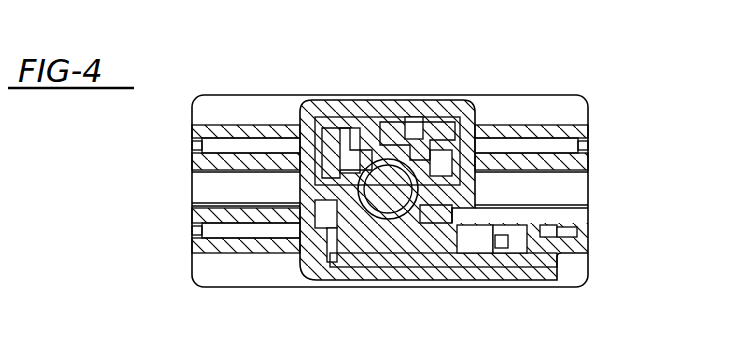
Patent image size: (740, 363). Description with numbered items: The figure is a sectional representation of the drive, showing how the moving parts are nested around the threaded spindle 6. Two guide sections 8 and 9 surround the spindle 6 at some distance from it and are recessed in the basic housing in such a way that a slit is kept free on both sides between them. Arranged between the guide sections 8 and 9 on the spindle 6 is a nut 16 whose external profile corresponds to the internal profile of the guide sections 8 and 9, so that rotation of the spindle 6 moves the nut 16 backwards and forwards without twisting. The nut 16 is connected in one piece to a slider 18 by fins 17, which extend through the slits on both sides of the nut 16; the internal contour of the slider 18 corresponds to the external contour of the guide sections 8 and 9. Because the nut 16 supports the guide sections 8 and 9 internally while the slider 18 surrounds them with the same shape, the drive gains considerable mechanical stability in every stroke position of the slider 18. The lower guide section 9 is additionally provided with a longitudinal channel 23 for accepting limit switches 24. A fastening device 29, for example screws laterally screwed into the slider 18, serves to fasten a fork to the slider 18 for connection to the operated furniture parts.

The slider 18 is at (260, 110).
The guide section 8 is at (374, 125).
The fins 17 is at (462, 190).
The fastening device 29 is at (562, 197).
The spindle 6 is at (392, 196).
The guide section 9 is at (395, 282).
The nut 16 is at (440, 205).
The limit switches 24 is at (515, 262).
The longitudinal channel 23 is at (553, 270).